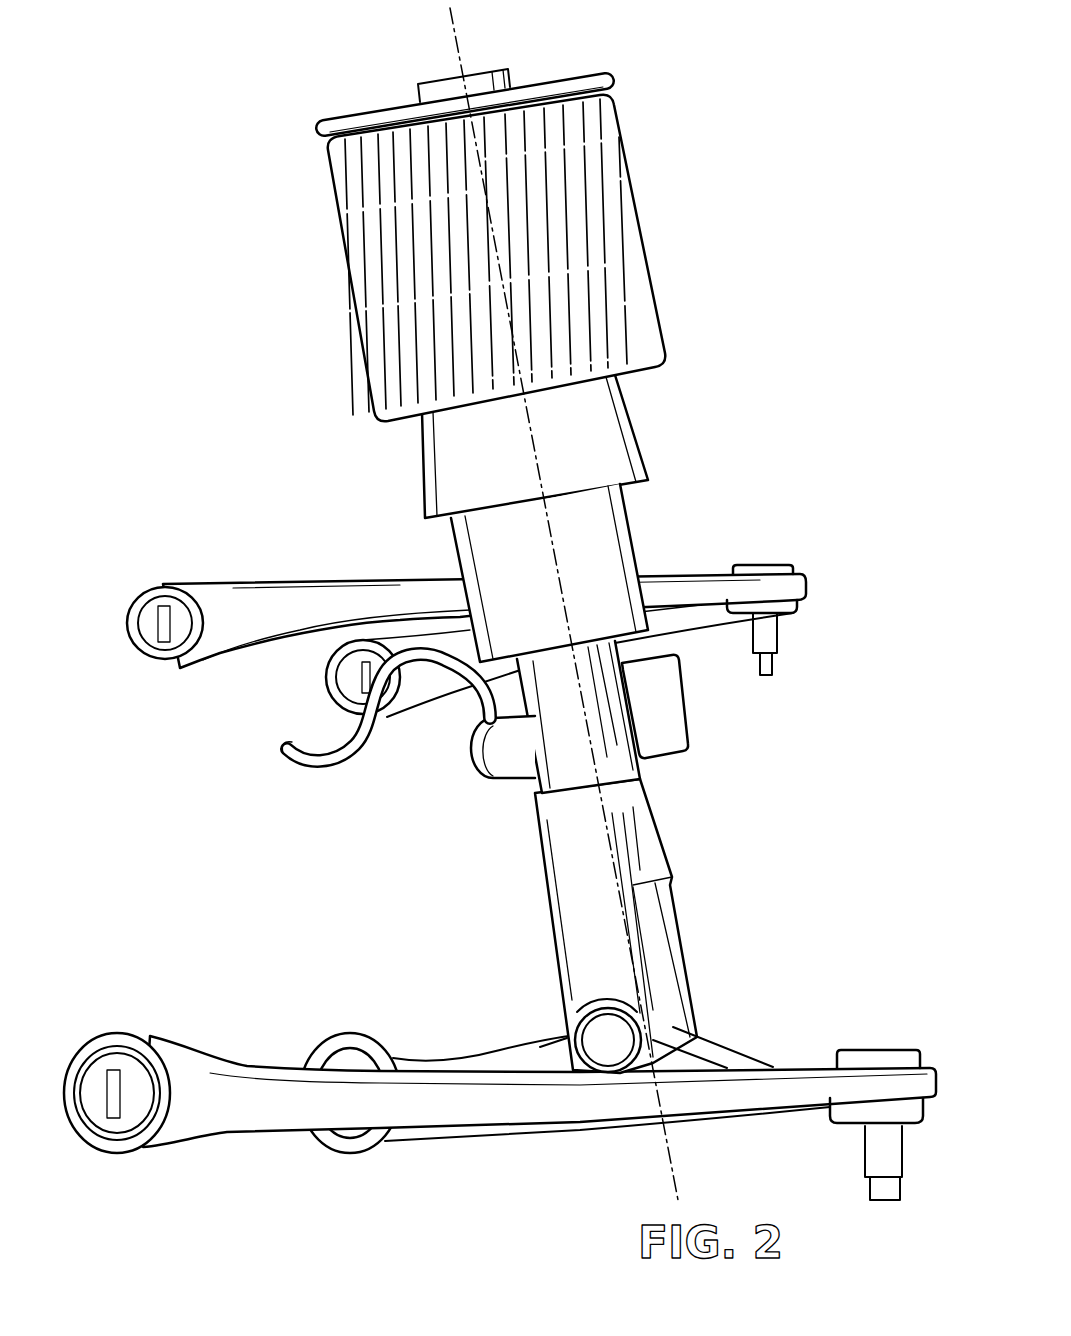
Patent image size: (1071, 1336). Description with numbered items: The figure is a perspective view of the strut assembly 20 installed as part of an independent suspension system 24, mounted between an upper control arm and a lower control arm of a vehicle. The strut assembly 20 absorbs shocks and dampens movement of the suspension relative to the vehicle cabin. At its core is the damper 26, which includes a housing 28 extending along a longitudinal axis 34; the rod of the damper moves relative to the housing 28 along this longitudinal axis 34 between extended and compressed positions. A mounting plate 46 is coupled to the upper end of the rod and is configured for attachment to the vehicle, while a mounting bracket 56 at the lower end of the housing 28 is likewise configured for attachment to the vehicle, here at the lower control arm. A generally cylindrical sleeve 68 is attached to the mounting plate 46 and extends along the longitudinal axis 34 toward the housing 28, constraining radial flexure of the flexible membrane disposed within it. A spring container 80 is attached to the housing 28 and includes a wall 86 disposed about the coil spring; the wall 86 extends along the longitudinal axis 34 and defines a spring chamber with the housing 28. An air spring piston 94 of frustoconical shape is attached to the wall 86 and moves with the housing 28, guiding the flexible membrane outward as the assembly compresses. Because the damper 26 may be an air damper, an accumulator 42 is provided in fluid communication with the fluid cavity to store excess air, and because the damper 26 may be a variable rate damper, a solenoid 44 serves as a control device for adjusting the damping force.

The strut assembly 20 is at (536, 258).
The independent suspension system 24 is at (700, 50).
The damper 26 is at (534, 789).
The housing 28 is at (607, 699).
The longitudinal axis 34 is at (458, 46).
The accumulator 42 is at (675, 735).
The solenoid 44 is at (478, 755).
The mounting plate 46 is at (601, 66).
The mounting bracket 56 is at (573, 917).
The sleeve 68 is at (652, 282).
The spring container 80 is at (638, 543).
The wall 86 is at (519, 556).
The air spring piston 94 is at (618, 443).